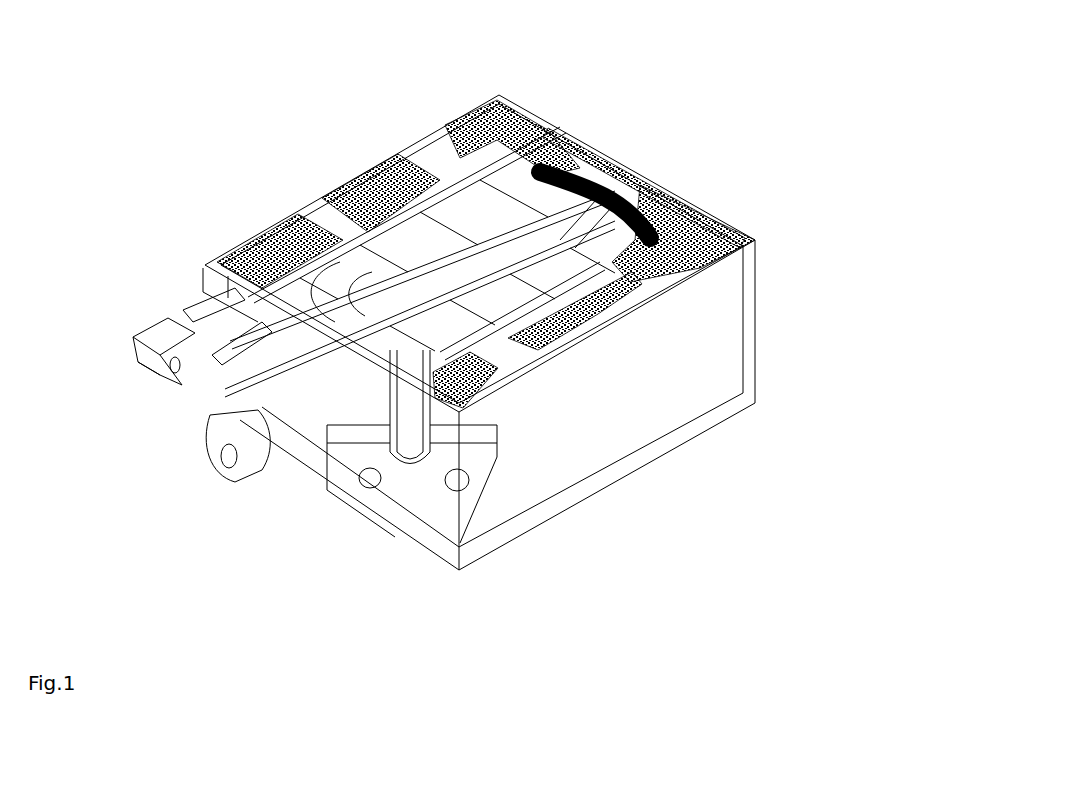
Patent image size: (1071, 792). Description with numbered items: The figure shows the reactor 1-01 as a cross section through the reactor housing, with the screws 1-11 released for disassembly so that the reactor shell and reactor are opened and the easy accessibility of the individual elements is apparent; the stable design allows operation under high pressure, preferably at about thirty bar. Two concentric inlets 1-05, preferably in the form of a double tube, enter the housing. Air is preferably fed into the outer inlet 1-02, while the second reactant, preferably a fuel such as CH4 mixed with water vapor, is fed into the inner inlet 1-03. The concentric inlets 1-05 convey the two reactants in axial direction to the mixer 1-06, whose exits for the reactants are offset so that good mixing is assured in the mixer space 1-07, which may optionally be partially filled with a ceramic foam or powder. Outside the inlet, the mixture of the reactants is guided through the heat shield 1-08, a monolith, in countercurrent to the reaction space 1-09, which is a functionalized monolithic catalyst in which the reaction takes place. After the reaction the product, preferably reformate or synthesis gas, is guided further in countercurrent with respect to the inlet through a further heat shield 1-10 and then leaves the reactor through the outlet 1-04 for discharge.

The reactor 1-01 is at (768, 267).
The outer inlet 1-02 is at (168, 290).
The inner inlet 1-03 is at (207, 408).
The outlet for product 1-04 is at (417, 387).
The concentric inlets 1-05 is at (455, 242).
The mixer 1-06 is at (550, 160).
The mixer space 1-07 is at (615, 215).
The heat shield 1-08 is at (583, 245).
The reaction space 1-09 is at (530, 288).
The further heat shield 1-10 is at (473, 300).
The screws 1-11 is at (455, 157).